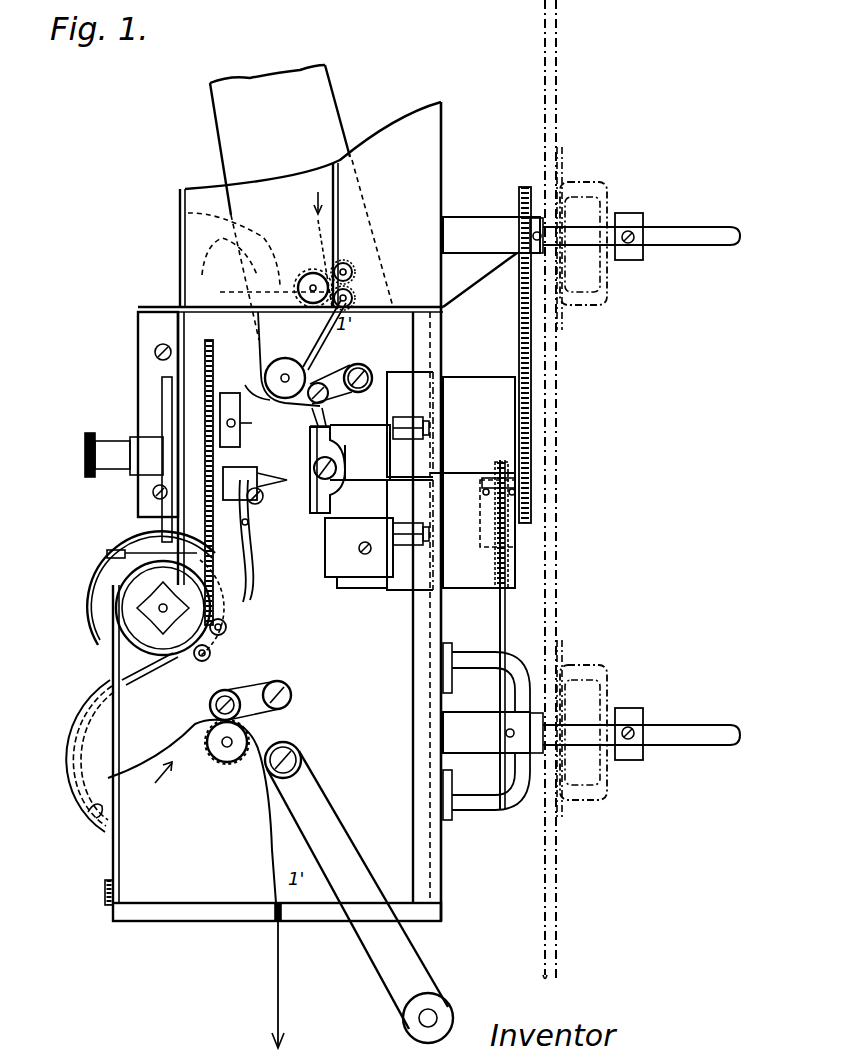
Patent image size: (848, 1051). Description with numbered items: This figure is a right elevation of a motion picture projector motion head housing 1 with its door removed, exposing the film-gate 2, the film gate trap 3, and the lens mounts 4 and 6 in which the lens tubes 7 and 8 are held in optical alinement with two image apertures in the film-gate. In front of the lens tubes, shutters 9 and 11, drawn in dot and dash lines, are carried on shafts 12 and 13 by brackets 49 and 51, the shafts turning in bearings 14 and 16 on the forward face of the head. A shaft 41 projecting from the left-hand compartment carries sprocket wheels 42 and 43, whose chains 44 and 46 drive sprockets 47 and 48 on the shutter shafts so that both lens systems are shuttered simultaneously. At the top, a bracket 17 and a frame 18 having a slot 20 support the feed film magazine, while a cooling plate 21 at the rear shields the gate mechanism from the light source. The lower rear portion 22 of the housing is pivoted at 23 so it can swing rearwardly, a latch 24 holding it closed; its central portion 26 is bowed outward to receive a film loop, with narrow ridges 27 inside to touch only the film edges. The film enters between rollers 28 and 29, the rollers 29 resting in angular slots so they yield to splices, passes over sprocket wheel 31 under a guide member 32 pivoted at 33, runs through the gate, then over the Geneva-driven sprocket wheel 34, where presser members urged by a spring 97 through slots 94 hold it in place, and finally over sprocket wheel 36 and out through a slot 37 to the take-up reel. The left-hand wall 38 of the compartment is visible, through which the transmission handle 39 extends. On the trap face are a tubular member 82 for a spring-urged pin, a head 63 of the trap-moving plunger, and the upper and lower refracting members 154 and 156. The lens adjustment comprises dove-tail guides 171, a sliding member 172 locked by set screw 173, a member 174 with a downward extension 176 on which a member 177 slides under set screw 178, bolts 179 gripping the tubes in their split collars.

The motion head housing 1 is at (438, 876).
The film-gate 2 is at (210, 345).
The film gate trap 3 is at (215, 357).
The lens mount 4 is at (400, 383).
The lens mount 6 is at (398, 588).
The lens tube 7 is at (480, 385).
The lens tube 8 is at (465, 578).
The shutter 9 is at (550, 398).
The shutter 11 is at (558, 538).
The shaft 12 is at (706, 238).
The shaft 13 is at (696, 733).
The bearing 14 is at (493, 235).
The bearing 16 is at (493, 732).
The bracket 17 is at (301, 235).
The frame 18 is at (310, 204).
The slot 20 is at (345, 264).
The cooling plate 21 is at (160, 395).
The lower portion of the rear of the motion head housing 22 is at (120, 757).
The pivot 23 is at (102, 907).
The latch 24 is at (106, 554).
The central portion 26 is at (70, 798).
The narrow ridges 27 is at (96, 815).
The roller 28 is at (306, 278).
The rollers 29 is at (352, 298).
The sprocket wheel 31 is at (284, 358).
The guide member 32 is at (325, 383).
The pivot 33 is at (360, 366).
The sprocket wheel 34 is at (168, 665).
The sprocket wheel 36 is at (245, 738).
The slot 37 is at (275, 925).
The left-hand wall of the right-hand compartment 38 is at (356, 883).
The handle 39 is at (345, 860).
The shaft 41 is at (492, 505).
The sprocket wheel 42 is at (530, 490).
The sprocket wheel 43 is at (500, 470).
The chain 44 is at (520, 320).
The chain 46 is at (508, 627).
The sprocket 47 is at (515, 200).
The sprocket 48 is at (498, 780).
The bracket 49 is at (600, 195).
The bracket 51 is at (600, 780).
The head 63 is at (84, 455).
The tubular member 82 is at (240, 468).
The slots 94 is at (226, 630).
The spring 97 is at (210, 655).
The upper refracting member 154 is at (250, 419).
The lower refracting member 156 is at (236, 548).
The dove-tail guides 171 is at (309, 510).
The dove-tail member 172 is at (310, 458).
The set screw 173 is at (337, 472).
The member 174 is at (367, 435).
The downward extension 176 is at (350, 590).
The member 177 is at (326, 543).
The set screw 178 is at (360, 553).
The bolt 179 is at (410, 440).